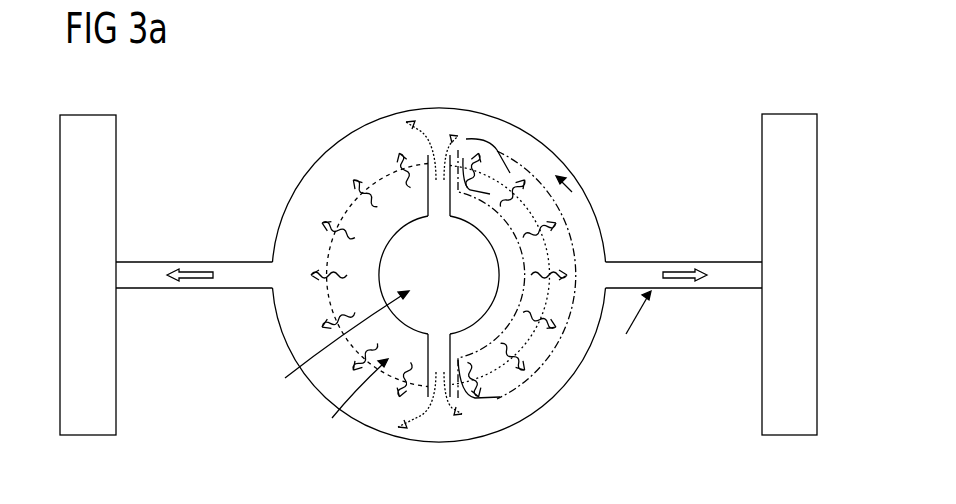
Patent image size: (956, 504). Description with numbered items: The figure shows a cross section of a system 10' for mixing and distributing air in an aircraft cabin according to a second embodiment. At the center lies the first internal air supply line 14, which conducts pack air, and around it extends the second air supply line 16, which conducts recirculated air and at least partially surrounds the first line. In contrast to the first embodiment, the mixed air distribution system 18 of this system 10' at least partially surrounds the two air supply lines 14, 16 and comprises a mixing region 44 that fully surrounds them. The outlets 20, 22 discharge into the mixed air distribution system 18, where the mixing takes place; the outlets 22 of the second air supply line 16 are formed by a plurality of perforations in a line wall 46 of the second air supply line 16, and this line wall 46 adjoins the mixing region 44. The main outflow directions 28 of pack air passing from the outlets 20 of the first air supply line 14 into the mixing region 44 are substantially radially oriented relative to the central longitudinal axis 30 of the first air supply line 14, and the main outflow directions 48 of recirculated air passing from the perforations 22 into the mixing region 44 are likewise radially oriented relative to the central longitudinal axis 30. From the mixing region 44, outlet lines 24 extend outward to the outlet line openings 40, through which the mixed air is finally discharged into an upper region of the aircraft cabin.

The system for mixing and distributing air 10' is at (217, 98).
The first internal air supply line 14 is at (338, 352).
The second air supply line 16 is at (351, 406).
The mixed air distribution system 18 is at (578, 187).
The outlet of the first air supply line 20 is at (466, 390).
The outlet of the second air supply line 22 is at (505, 186).
The outlet line 24 is at (196, 262).
The main outflow direction 28 is at (437, 150).
The central longitudinal axis 30 is at (438, 271).
The outlet line opening 40 is at (106, 147).
The mixing region 44 is at (350, 152).
The line wall 46 is at (578, 243).
The main outflow direction 48 is at (320, 262).